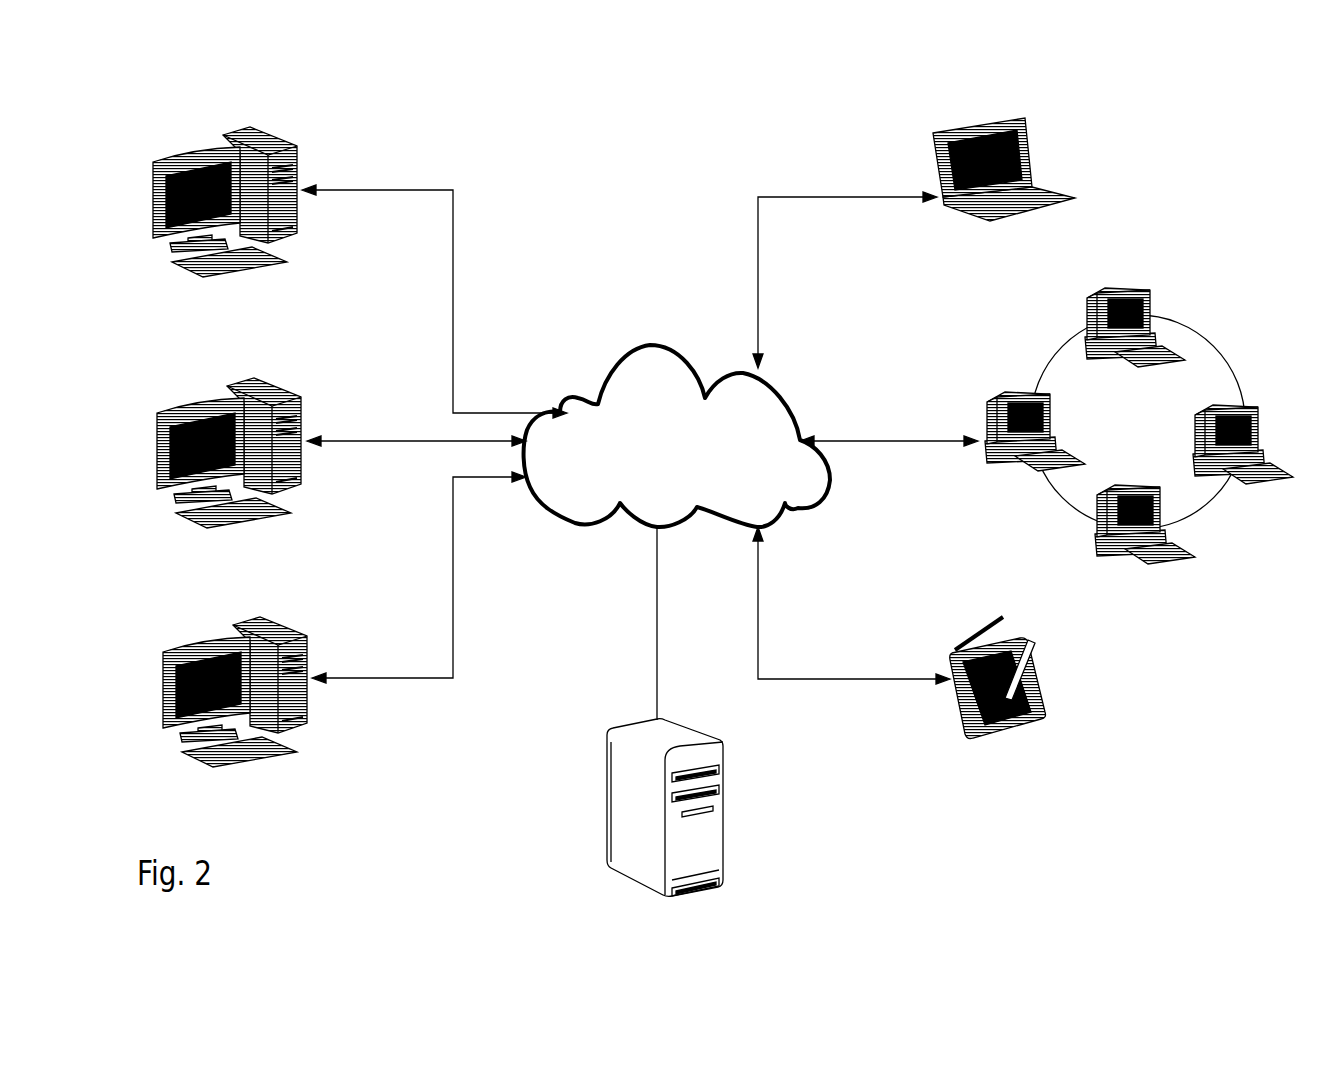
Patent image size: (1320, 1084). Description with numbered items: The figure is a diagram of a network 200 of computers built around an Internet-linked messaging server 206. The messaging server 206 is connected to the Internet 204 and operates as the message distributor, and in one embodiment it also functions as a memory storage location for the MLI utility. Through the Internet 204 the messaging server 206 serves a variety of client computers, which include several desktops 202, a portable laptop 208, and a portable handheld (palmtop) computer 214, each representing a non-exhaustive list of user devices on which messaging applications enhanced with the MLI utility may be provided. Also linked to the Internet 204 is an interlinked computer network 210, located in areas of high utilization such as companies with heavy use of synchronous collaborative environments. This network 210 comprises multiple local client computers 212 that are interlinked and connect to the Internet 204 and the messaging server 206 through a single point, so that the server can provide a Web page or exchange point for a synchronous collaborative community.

The network 200 is at (637, 109).
The desktops 202 is at (178, 160).
The Internet 204 is at (606, 362).
The messaging server 206 is at (607, 728).
The portable laptop 208 is at (932, 143).
The interlinked computer network 210 is at (1050, 353).
The local client computers 212 is at (1100, 357).
The portable handheld (palmtop) computer 214 is at (963, 736).